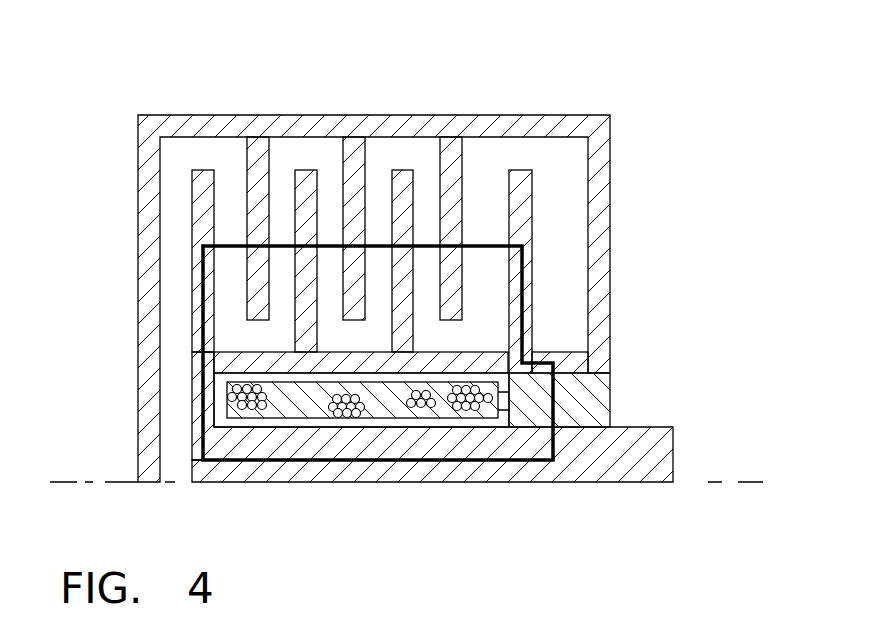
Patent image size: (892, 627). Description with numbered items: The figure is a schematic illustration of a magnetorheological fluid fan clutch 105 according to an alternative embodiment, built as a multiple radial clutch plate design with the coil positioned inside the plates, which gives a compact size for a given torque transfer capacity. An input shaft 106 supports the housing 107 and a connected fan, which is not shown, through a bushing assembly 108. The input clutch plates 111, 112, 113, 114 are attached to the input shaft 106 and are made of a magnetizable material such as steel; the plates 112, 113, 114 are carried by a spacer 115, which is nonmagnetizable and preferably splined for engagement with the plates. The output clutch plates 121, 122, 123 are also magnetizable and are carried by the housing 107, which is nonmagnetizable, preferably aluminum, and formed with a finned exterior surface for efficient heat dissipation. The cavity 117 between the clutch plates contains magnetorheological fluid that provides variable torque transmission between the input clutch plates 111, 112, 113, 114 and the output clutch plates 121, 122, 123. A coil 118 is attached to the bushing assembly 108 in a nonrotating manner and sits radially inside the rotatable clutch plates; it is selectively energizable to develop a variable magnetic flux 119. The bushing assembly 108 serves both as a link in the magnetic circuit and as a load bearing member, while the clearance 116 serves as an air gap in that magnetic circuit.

The magnetorheological fluid fan clutch 105 is at (414, 261).
The input shaft 106 is at (643, 425).
The housing 107 is at (608, 143).
The bushing assembly 108 is at (612, 397).
The input clutch plate 111 is at (203, 170).
The input clutch plate 112 is at (306, 170).
The input clutch plate 113 is at (403, 170).
The input clutch plate 114 is at (520, 170).
The spacer 115 is at (245, 352).
The clearance 116 is at (532, 367).
The cavity 117 is at (232, 218).
The coil 118 is at (232, 396).
The magnetic flux 119 is at (507, 462).
The output clutch plate 121 is at (247, 180).
The output clutch plate 122 is at (343, 174).
The output clutch plate 123 is at (440, 174).